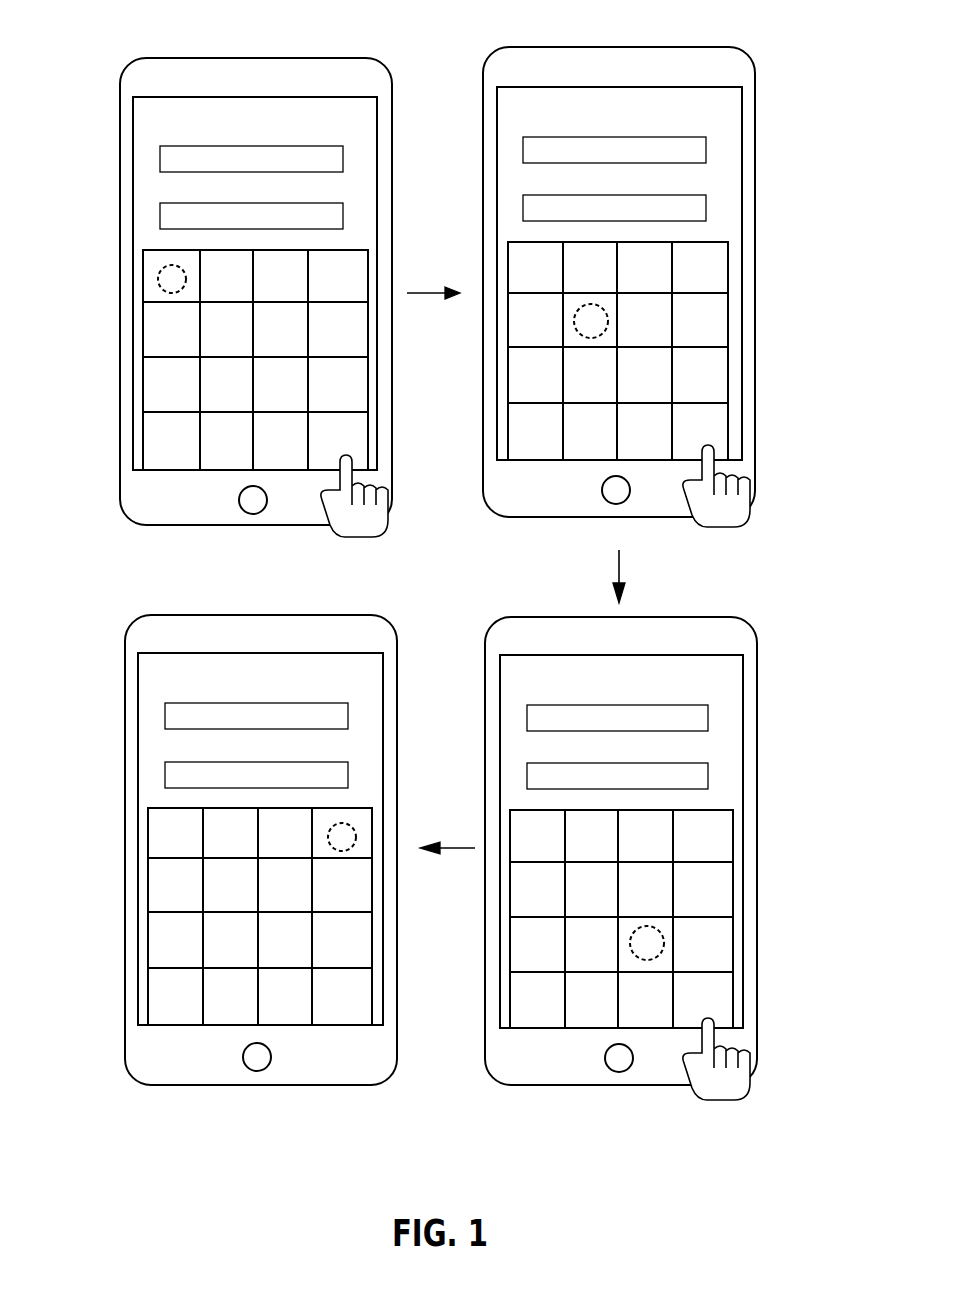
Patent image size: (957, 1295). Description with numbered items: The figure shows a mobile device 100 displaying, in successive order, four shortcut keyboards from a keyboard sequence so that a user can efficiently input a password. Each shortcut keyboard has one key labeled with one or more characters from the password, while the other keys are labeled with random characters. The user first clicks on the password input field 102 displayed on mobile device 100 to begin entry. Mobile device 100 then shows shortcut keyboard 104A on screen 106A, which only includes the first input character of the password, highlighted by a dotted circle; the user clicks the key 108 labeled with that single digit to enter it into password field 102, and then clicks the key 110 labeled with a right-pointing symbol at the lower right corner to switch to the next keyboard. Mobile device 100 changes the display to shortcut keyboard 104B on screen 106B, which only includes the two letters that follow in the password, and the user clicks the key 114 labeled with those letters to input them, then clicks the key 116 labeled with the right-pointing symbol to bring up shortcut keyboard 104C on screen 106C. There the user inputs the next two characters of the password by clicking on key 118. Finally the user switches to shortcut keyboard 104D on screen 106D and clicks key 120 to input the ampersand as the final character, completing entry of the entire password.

The mobile device 100 is at (188, 56).
The password input field 102 is at (160, 228).
The shortcut keyboard 104A is at (143, 470).
The shortcut keyboard 104B is at (730, 241).
The shortcut keyboard 104C is at (734, 808).
The shortcut keyboard 104D is at (148, 1027).
The screen 106A is at (143, 172).
The screen 106B is at (510, 122).
The screen 106C is at (512, 710).
The screen 106D is at (146, 713).
The key 108 is at (152, 292).
The key 110 is at (353, 432).
The key 114 is at (573, 337).
The key 116 is at (718, 428).
The key 118 is at (718, 987).
The key 120 is at (360, 845).